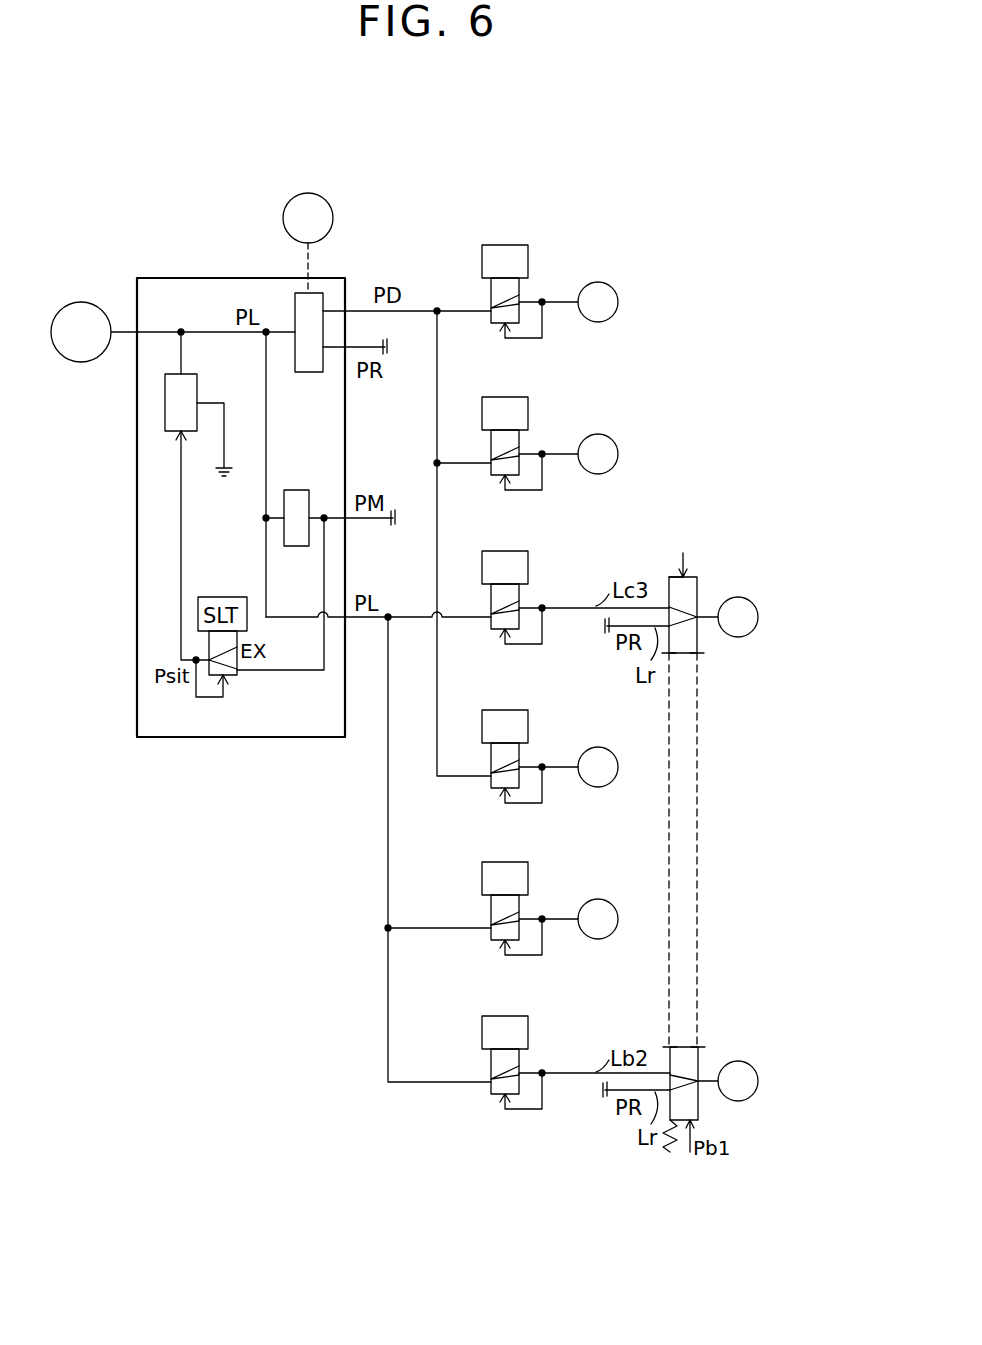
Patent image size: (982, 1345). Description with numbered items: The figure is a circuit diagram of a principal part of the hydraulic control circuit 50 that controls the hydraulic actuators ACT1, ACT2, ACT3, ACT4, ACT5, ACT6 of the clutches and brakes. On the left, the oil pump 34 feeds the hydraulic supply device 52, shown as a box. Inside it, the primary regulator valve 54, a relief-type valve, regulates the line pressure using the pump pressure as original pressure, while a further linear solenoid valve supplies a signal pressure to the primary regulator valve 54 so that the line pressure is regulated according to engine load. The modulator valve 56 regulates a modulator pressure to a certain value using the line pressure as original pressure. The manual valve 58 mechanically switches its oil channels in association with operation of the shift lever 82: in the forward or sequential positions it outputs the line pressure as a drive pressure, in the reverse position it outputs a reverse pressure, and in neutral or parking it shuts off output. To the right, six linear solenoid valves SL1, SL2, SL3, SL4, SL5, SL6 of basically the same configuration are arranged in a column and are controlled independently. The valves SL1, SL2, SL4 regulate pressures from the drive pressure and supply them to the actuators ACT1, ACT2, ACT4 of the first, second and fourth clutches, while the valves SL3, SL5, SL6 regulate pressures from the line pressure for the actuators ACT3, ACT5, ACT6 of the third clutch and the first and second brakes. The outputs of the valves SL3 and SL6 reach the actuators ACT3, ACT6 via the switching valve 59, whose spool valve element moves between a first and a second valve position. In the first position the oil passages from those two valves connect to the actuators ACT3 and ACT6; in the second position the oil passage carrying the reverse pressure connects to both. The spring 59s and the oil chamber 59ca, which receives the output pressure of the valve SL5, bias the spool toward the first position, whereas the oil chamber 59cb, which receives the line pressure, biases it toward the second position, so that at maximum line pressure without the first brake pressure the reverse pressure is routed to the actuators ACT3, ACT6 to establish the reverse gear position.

The oil pump 34 is at (86, 303).
The hydraulic control circuit 50 is at (489, 170).
The hydraulic supply device 52 is at (248, 296).
The primary regulator valve 54 is at (193, 388).
The modulator valve 56 is at (303, 502).
The manual valve 58 is at (305, 362).
The switching valve 59 is at (693, 577).
The oil chamber 59ca is at (700, 1118).
The oil chamber 59cb is at (669, 582).
The spring 59s is at (670, 1152).
The shift lever 82 is at (316, 208).
The linear solenoid valve SL1 is at (506, 247).
The linear solenoid valve SL2 is at (506, 399).
The linear solenoid valve SL3 is at (506, 553).
The linear solenoid valve SL4 is at (506, 712).
The linear solenoid valve SL5 is at (506, 864).
The linear solenoid valve SL6 is at (506, 1018).
The hydraulic actuator ACT1 is at (600, 283).
The hydraulic actuator ACT2 is at (600, 435).
The hydraulic actuator ACT3 is at (742, 597).
The hydraulic actuator ACT4 is at (600, 748).
The hydraulic actuator ACT5 is at (600, 900).
The hydraulic actuator ACT6 is at (742, 1061).